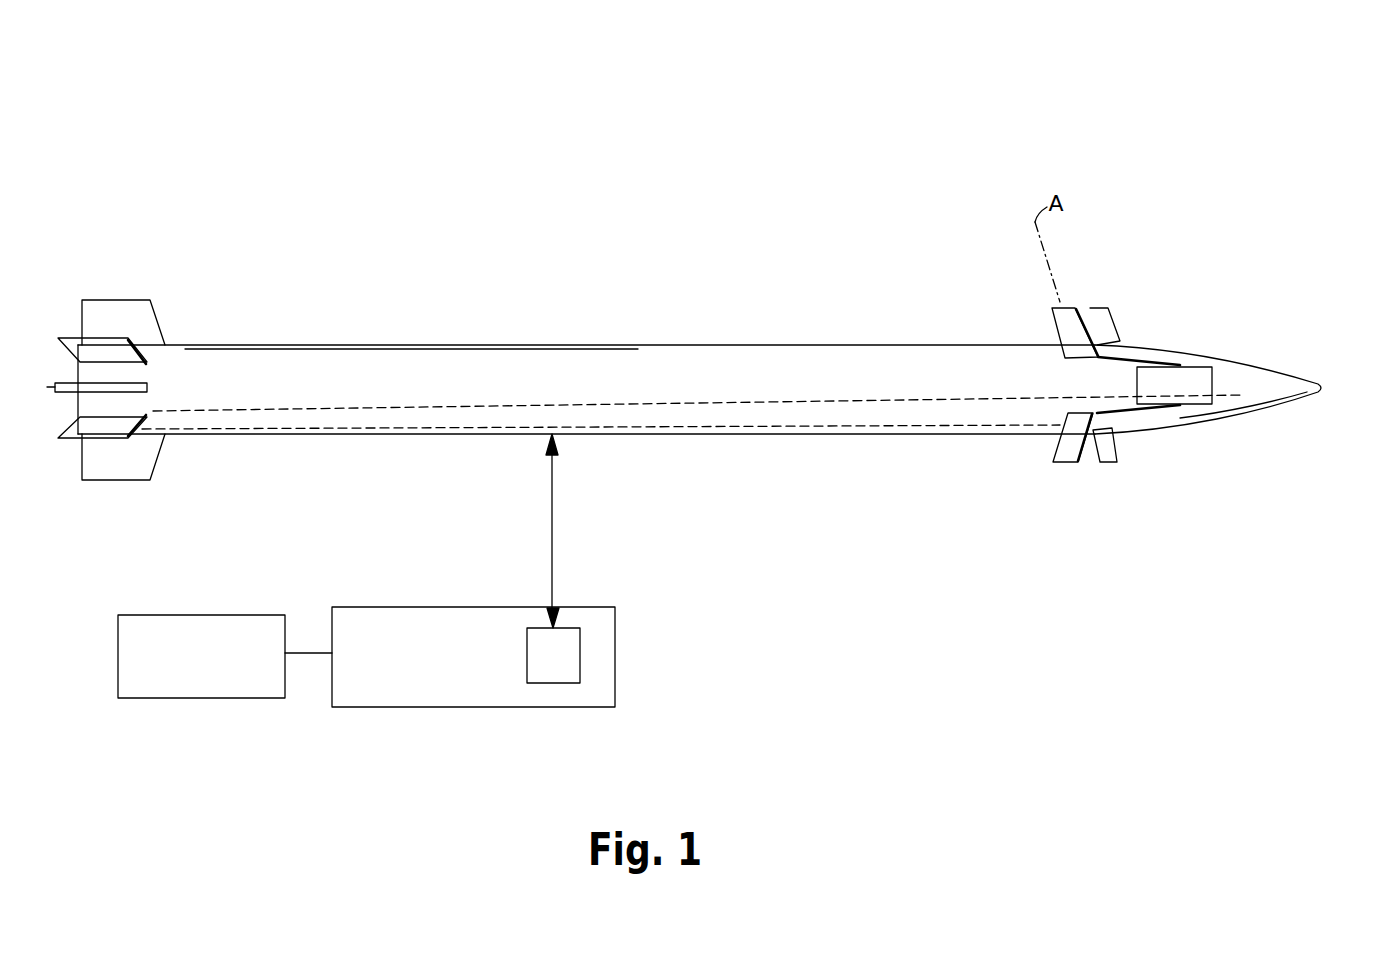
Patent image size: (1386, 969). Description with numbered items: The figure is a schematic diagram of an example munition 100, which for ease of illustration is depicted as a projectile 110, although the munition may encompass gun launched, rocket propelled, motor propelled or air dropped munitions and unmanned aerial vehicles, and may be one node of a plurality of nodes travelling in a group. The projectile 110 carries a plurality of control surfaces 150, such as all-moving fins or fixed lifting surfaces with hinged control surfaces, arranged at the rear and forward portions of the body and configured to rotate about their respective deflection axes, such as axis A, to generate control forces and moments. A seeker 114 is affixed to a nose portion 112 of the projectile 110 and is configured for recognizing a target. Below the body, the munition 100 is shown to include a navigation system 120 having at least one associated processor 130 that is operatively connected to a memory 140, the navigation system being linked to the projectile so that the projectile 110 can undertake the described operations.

The munition 100 is at (348, 142).
The projectile 110 is at (607, 343).
The nose portion 112 is at (1324, 388).
The seeker 114 is at (1202, 407).
The navigation system 120 is at (378, 707).
The processor 130 is at (538, 667).
The memory 140 is at (172, 698).
The control surfaces 150 is at (139, 300).